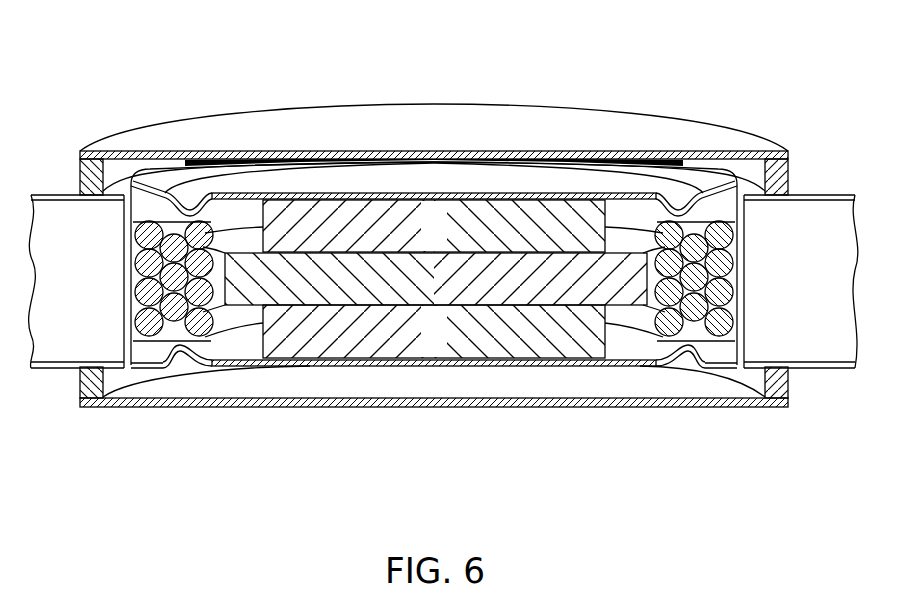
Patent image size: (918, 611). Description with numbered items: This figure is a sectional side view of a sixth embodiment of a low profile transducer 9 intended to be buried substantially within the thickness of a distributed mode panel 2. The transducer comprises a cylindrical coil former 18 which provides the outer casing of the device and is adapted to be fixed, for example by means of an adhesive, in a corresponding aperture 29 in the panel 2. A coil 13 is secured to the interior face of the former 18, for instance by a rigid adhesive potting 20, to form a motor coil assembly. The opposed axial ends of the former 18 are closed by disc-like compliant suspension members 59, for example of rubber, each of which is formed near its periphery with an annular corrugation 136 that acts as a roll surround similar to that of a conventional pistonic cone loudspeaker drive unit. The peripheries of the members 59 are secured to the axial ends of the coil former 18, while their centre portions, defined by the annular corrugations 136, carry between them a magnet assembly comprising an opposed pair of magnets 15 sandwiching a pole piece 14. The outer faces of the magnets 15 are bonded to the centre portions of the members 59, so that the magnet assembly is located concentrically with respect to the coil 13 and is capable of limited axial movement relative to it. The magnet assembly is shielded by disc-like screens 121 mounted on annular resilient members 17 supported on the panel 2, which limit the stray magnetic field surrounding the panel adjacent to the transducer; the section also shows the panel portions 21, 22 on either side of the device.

The distributed mode panel 2 is at (802, 273).
The transducer 9 is at (421, 66).
The coil 13 is at (173, 353).
The pole piece 14 is at (330, 273).
The magnets 15 is at (553, 217).
The annular resilient members 17 is at (80, 178).
The coil former 18 is at (720, 348).
The adhesive potting 20 is at (160, 228).
The left shaft 21 is at (50, 372).
The right shaft 22 is at (817, 332).
The aperture 29 is at (128, 367).
The compliant suspension members 59 is at (520, 192).
The screens 121 is at (666, 137).
The annular corrugation 136 is at (197, 200).